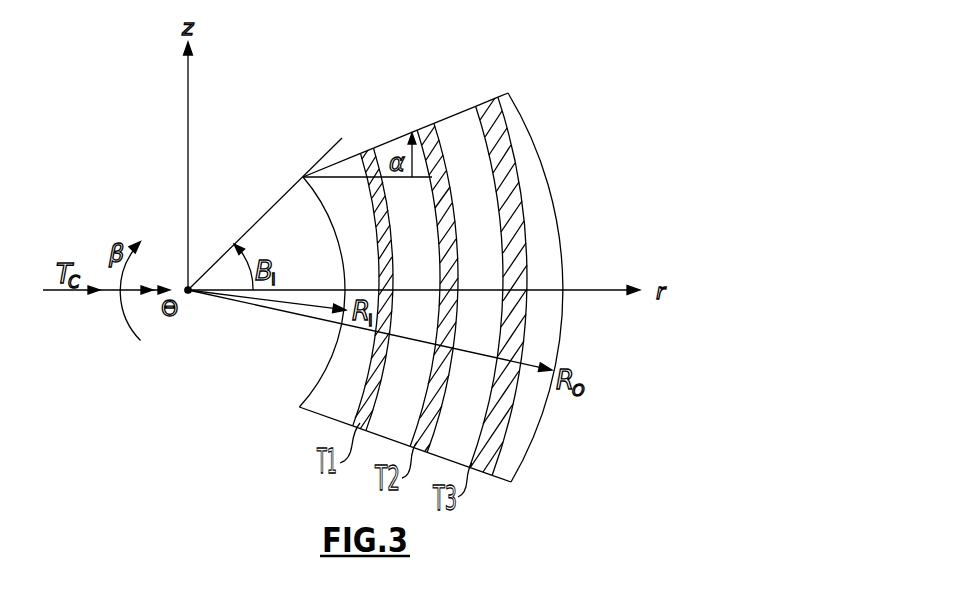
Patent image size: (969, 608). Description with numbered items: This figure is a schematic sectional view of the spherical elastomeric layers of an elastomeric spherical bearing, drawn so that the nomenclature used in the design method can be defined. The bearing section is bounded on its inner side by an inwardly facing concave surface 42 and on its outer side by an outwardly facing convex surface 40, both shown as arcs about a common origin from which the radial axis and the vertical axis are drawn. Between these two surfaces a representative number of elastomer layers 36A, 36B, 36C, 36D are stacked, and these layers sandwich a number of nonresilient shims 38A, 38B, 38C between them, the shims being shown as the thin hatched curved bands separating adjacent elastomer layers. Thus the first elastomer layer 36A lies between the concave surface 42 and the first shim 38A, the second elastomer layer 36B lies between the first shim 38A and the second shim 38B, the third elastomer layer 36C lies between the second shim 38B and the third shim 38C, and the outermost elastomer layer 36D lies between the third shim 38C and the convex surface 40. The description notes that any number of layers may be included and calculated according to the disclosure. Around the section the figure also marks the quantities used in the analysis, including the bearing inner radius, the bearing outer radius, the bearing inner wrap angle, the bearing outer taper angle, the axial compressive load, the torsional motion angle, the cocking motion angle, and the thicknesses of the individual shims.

The elastomer layer 36A is at (343, 170).
The elastomer layer 36B is at (410, 133).
The elastomer layer 36C is at (458, 130).
The elastomer layer 36D is at (525, 160).
The nonresilient shim 38A is at (362, 153).
The nonresilient shim 38B is at (445, 150).
The nonresilient shim 38C is at (493, 120).
The outwardly facing convex surface 40 is at (560, 237).
The inwardly facing concave surface 42 is at (342, 253).